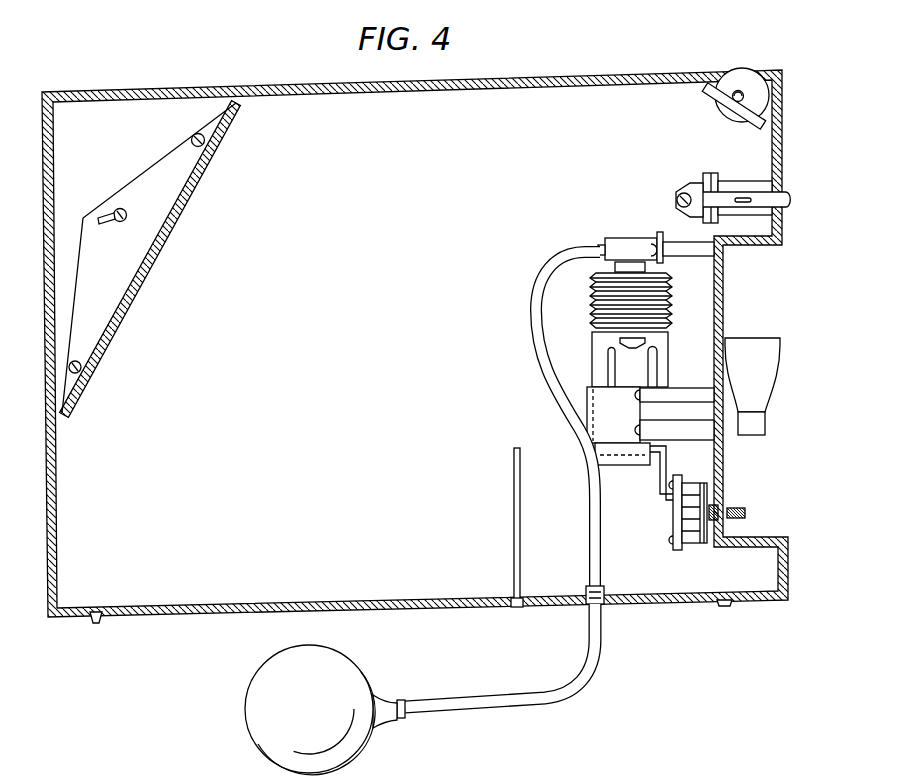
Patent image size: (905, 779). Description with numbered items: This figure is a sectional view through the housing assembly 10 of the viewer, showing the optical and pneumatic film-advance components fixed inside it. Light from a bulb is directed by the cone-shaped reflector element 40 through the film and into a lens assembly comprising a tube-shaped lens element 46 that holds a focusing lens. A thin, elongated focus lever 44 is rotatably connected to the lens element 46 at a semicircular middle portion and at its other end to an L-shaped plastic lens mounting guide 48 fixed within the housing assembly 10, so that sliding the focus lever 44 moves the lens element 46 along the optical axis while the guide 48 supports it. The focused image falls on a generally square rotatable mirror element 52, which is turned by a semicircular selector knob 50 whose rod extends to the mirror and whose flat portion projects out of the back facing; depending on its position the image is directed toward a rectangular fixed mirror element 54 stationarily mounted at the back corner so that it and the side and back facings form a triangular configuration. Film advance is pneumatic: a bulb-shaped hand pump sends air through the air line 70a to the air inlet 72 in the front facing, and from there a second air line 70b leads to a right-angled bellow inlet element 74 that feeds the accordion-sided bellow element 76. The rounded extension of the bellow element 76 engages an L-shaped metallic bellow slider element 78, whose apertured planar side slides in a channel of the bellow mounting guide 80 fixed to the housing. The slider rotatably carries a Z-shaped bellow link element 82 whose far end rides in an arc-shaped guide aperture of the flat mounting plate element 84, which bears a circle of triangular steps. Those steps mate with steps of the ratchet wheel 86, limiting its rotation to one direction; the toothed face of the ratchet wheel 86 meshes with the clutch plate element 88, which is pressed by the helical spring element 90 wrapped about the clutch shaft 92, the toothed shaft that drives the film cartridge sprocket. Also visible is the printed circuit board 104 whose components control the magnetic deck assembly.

The housing assembly 10 is at (592, 62).
The reflector element 40 is at (770, 338).
The focus lever 44 is at (784, 196).
The lens element 46 is at (734, 175).
The lens mounting guide 48 is at (690, 190).
The selector knob 50 is at (746, 68).
The rotatable mirror element 52 is at (710, 106).
The fixed mirror element 54 is at (201, 170).
The air line 70a is at (470, 696).
The air line 70b is at (586, 486).
The air inlet 72 is at (604, 600).
The bellow inlet element 74 is at (620, 238).
The bellow element 76 is at (590, 290).
The bellow slider element 78 is at (600, 360).
The bellow mounting guide 80 is at (587, 405).
The bellow link element 82 is at (668, 458).
The mounting plate element 84 is at (672, 512).
The ratchet wheel 86 is at (694, 532).
The clutch plate element 88 is at (706, 545).
The spring element 90 is at (717, 505).
The clutch shaft 92 is at (748, 512).
The printed circuit board 104 is at (514, 474).